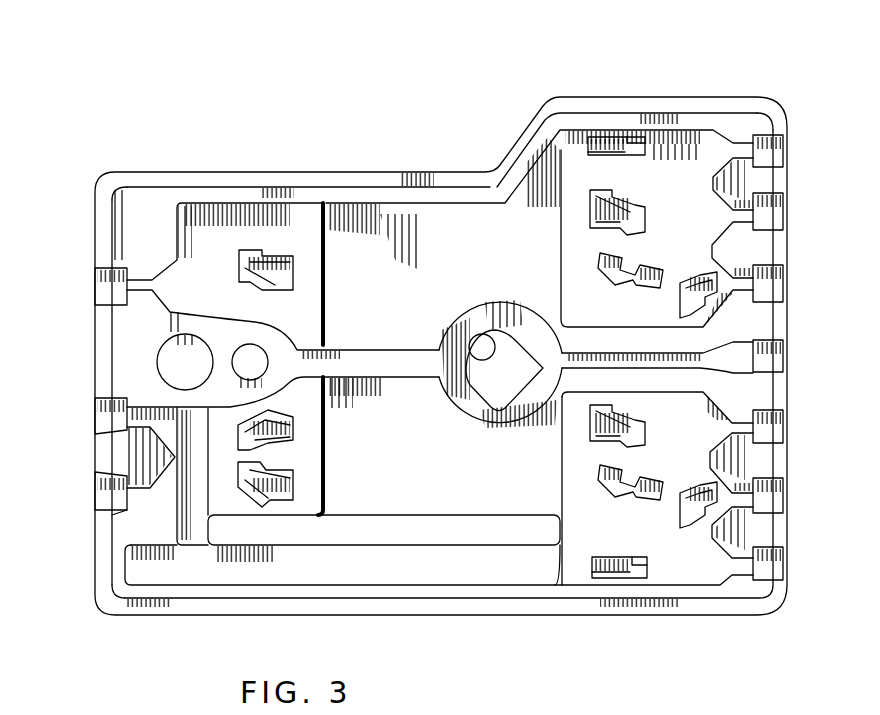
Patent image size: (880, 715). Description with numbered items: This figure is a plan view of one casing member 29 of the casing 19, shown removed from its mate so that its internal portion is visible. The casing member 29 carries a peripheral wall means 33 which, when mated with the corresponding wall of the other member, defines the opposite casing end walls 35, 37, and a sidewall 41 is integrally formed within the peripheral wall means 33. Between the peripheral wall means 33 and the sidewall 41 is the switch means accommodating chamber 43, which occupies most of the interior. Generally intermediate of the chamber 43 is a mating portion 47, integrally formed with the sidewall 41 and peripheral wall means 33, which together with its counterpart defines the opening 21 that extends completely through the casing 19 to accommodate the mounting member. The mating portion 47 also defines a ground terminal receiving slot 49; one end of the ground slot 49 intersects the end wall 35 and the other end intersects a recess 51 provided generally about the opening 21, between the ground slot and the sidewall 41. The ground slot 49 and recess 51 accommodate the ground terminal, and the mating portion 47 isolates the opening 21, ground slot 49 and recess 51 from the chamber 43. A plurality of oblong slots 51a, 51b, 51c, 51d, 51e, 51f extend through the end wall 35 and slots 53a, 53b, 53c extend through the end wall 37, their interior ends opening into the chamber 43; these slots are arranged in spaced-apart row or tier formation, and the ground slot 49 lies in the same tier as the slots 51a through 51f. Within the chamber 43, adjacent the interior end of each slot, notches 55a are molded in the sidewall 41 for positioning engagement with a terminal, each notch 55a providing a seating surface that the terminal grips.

The casing 19 is at (520, 103).
The casing member 29 is at (207, 170).
The peripheral wall means 33 is at (303, 184).
The end wall 35 is at (787, 531).
The end wall 37 is at (98, 531).
The sidewall 41 is at (385, 200).
The switch means accommodating chamber 43 is at (458, 215).
The opening 21 is at (470, 332).
The mating portion 47 is at (467, 390).
The ground terminal receiving slot 49 is at (608, 352).
The recess 51 is at (491, 412).
The slot 51a is at (775, 604).
The slot 51b is at (782, 478).
The slot 51c is at (782, 408).
The slot 51d is at (782, 265).
The slot 51e is at (782, 193).
The slot 51f is at (781, 112).
The slot 53a is at (97, 476).
The slot 53b is at (97, 398).
The slot 53c is at (97, 268).
The notch 55a is at (255, 275).